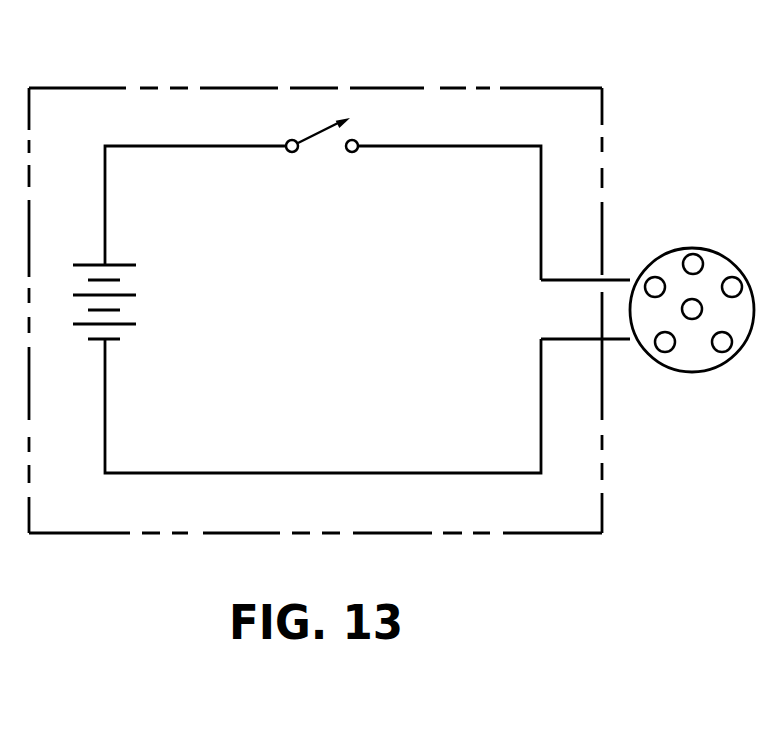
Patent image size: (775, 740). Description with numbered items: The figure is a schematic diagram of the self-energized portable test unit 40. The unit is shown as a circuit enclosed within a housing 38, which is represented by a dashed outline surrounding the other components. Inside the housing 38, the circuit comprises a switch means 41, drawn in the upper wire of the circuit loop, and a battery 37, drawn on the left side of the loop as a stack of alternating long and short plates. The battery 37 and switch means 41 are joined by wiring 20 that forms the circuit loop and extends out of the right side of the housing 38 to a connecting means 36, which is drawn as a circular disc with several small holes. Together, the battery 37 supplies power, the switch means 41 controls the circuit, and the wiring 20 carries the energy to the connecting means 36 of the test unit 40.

The housing 38 is at (568, 86).
The self-energized portable test unit 40 is at (218, 86).
The switch means 41 is at (313, 133).
The battery 37 is at (132, 284).
The wiring 20 is at (568, 281).
The connecting means 36 is at (668, 248).